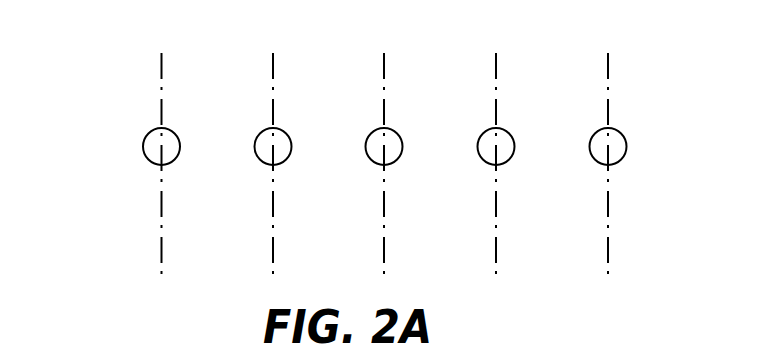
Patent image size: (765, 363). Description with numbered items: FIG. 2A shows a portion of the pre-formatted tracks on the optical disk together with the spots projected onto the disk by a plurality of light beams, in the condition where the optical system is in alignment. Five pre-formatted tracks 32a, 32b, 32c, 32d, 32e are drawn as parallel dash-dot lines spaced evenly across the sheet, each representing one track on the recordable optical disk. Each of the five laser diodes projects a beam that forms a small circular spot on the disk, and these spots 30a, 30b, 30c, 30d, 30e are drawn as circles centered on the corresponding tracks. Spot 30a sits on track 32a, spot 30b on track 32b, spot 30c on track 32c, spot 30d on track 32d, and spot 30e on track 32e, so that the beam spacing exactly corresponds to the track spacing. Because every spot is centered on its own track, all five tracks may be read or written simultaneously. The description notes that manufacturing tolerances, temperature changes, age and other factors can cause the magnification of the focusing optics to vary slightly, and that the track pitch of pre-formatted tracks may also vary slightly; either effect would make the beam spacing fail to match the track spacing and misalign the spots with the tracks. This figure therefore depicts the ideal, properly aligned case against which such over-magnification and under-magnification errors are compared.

The spot 30a is at (152, 162).
The spot 30b is at (260, 165).
The spot 30c is at (375, 165).
The spot 30d is at (480, 165).
The spot 30e is at (595, 165).
The pre-formatted track 32a is at (160, 82).
The pre-formatted track 32b is at (272, 82).
The pre-formatted track 32c is at (383, 82).
The pre-formatted track 32d is at (495, 82).
The pre-formatted track 32e is at (607, 82).